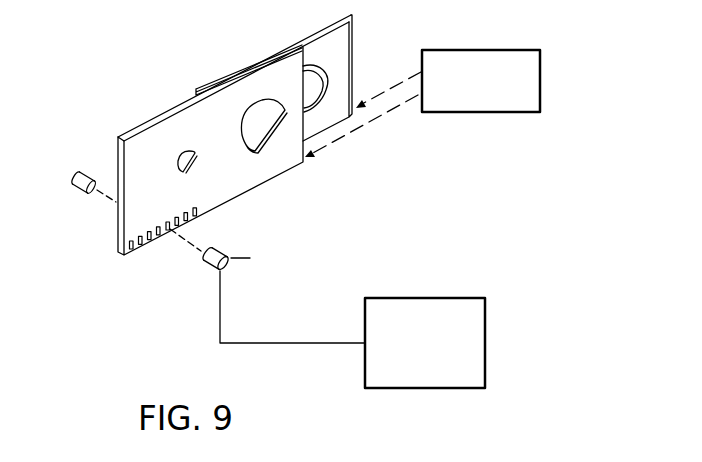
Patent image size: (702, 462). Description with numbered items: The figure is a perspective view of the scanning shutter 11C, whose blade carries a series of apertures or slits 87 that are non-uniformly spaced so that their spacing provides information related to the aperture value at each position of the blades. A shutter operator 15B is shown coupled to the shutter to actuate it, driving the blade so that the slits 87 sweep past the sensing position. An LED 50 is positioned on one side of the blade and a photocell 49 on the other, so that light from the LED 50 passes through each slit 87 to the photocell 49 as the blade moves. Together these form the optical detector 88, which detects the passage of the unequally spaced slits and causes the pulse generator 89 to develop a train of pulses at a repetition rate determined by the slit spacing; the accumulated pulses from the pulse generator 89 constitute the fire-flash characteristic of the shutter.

The optical detector 88 is at (125, 281).
The apertures or slits 87 is at (172, 204).
The scanning shutter 11C is at (291, 186).
The LED 50 is at (75, 191).
The photocell 49 is at (205, 268).
The pulse generator 89 is at (485, 336).
The shutter operator 15B is at (541, 92).